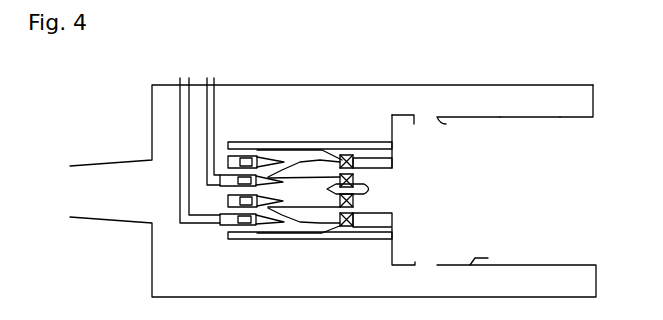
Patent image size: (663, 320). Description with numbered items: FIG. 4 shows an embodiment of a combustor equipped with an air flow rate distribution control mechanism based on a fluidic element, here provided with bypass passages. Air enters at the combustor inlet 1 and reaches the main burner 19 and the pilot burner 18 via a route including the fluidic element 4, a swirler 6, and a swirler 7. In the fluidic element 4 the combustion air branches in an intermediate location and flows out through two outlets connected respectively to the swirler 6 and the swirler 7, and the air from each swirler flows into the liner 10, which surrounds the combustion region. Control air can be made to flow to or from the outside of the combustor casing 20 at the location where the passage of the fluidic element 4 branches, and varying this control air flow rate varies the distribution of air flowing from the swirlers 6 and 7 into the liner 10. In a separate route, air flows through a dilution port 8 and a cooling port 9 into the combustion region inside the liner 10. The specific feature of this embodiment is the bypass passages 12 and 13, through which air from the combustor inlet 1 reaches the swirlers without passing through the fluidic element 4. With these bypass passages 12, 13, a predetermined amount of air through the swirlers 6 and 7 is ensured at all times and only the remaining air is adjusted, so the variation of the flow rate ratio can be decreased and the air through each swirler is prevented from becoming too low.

The combustor inlet 1 is at (333, 191).
The fluidic element 4 is at (259, 166).
The swirler 6 is at (343, 156).
The swirler 7 is at (358, 228).
The dilution port 8 is at (423, 120).
The cooling port 9 is at (473, 115).
The liner 10 is at (527, 115).
The bypass passage 12 is at (237, 140).
The bypass passage 13 is at (231, 191).
The pilot burner 18 is at (377, 192).
The main burner 19 is at (393, 163).
The combustor casing 20 is at (570, 92).